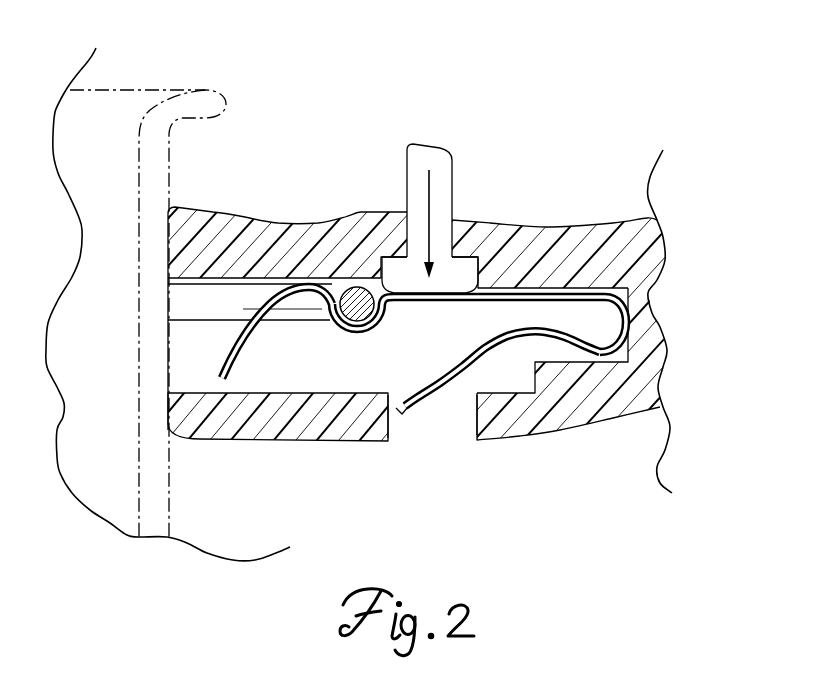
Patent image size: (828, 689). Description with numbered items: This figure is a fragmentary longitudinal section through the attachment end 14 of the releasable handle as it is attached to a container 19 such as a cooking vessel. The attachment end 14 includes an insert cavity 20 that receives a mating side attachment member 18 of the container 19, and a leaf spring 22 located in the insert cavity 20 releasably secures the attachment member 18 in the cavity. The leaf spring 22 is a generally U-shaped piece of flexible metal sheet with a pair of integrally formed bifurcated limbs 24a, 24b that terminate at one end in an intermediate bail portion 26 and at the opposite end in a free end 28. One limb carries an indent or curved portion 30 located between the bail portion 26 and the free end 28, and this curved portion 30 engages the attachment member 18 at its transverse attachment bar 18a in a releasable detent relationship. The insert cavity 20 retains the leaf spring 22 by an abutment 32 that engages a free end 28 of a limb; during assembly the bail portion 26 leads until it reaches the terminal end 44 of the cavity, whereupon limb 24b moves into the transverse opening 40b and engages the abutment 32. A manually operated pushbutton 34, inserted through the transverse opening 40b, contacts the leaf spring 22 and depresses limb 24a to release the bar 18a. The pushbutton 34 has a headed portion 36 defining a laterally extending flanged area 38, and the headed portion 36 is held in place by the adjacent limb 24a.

The container 19 is at (108, 123).
The attachment end 14 is at (200, 237).
The side attachment member 18 is at (247, 292).
The transverse attachment bar 18a is at (358, 286).
The insert cavity 20 is at (278, 373).
The leaf spring 22 is at (572, 300).
The bifurcated limb 24a is at (300, 290).
The bifurcated limb 24b is at (467, 350).
The intermediate bail portion 26 is at (622, 330).
The free end 28 is at (419, 409).
The indent or curved portion 30 is at (358, 334).
The abutment 32 is at (392, 414).
The pushbutton 34 is at (442, 182).
The headed portion 36 is at (432, 303).
The laterally extending flanged area 38 is at (493, 282).
The transverse opening 40b is at (462, 416).
The terminal end 44 is at (622, 350).